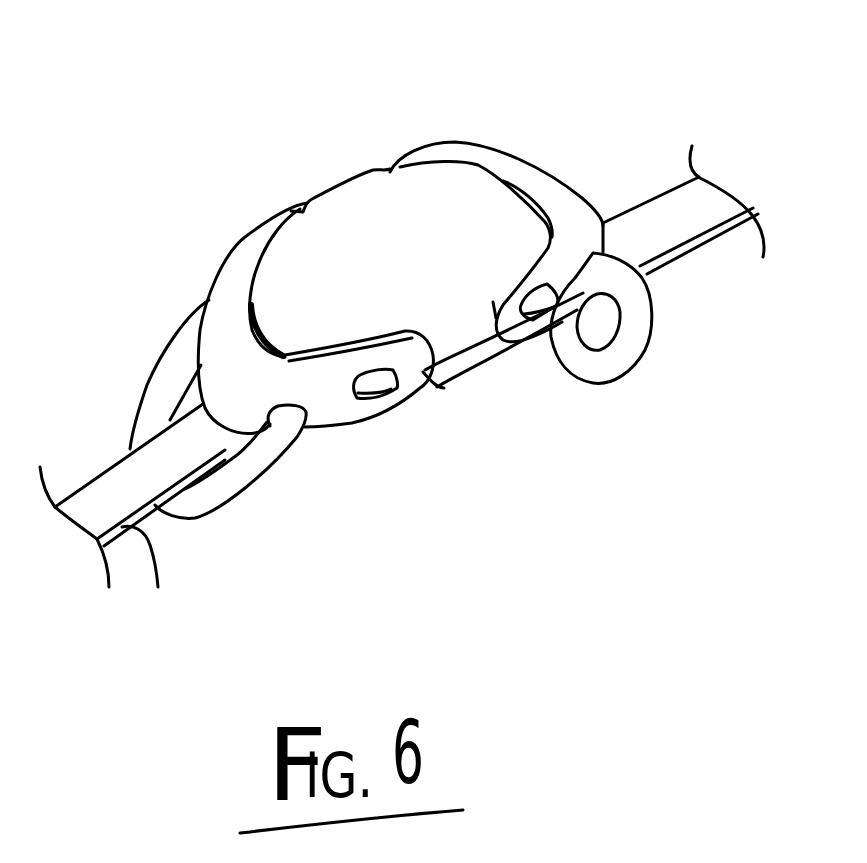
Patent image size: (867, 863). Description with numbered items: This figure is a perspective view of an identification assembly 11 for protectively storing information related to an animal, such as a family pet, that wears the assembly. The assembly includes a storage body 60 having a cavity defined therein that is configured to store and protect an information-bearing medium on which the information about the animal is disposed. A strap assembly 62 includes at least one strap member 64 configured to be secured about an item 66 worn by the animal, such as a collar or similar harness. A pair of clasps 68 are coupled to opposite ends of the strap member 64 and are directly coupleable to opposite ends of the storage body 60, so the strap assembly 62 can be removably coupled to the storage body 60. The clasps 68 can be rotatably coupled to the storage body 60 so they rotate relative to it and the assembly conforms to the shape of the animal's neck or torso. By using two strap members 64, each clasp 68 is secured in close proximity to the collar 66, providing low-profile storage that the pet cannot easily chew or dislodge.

The identification assembly 11 is at (213, 100).
The storage body 60 is at (343, 160).
The strap assembly 62 is at (183, 291).
The strap member 64 is at (644, 353).
The item worn by the animal 66 is at (664, 190).
The clasps 68 is at (460, 142).